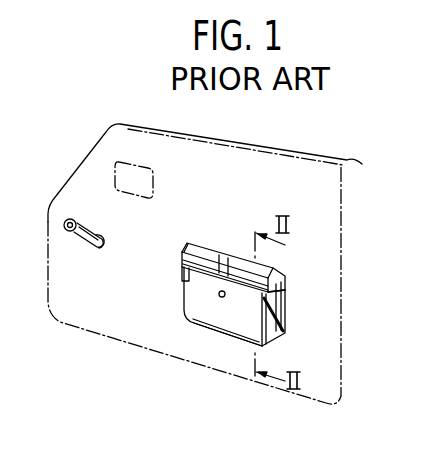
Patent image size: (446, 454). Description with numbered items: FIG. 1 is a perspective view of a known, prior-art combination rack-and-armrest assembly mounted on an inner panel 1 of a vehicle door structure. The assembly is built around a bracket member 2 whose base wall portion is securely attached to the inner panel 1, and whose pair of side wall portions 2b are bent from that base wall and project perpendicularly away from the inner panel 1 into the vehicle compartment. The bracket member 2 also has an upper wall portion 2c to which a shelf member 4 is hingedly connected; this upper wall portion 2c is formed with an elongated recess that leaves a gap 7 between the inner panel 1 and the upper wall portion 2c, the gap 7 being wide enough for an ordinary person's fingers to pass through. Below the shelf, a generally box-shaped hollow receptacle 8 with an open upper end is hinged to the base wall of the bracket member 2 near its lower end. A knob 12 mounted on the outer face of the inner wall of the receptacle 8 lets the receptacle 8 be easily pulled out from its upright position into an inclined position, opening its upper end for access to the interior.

The inner panel 1 is at (338, 209).
The bracket member 2 is at (287, 326).
The side wall portions 2b is at (183, 278).
The upper wall portion 2c is at (284, 289).
The shelf member 4 is at (191, 247).
The gap 7 is at (250, 261).
The receptacle 8 is at (222, 329).
The knob 12 is at (219, 296).